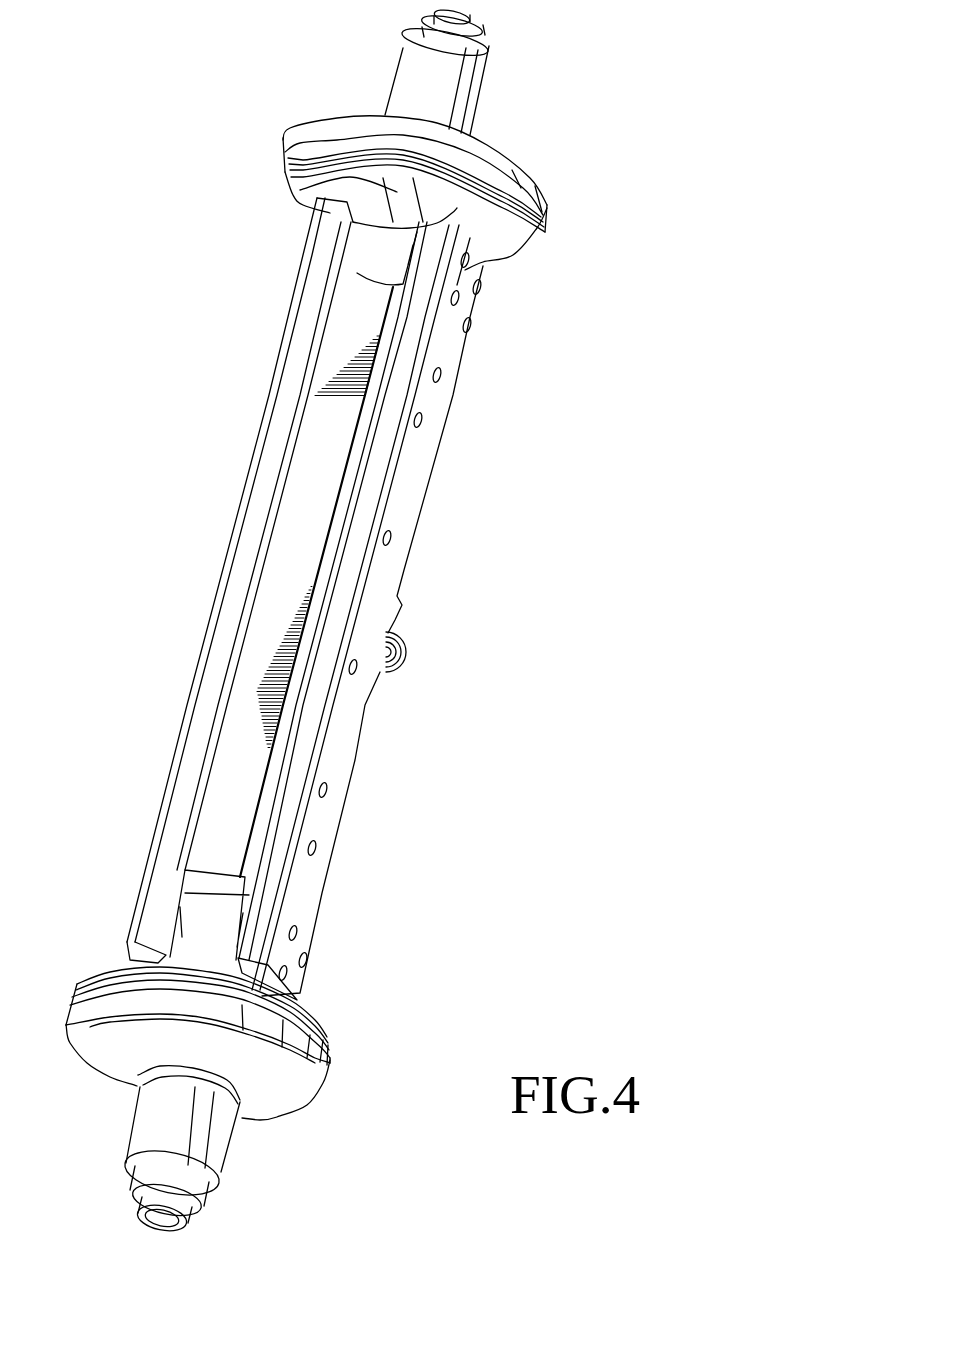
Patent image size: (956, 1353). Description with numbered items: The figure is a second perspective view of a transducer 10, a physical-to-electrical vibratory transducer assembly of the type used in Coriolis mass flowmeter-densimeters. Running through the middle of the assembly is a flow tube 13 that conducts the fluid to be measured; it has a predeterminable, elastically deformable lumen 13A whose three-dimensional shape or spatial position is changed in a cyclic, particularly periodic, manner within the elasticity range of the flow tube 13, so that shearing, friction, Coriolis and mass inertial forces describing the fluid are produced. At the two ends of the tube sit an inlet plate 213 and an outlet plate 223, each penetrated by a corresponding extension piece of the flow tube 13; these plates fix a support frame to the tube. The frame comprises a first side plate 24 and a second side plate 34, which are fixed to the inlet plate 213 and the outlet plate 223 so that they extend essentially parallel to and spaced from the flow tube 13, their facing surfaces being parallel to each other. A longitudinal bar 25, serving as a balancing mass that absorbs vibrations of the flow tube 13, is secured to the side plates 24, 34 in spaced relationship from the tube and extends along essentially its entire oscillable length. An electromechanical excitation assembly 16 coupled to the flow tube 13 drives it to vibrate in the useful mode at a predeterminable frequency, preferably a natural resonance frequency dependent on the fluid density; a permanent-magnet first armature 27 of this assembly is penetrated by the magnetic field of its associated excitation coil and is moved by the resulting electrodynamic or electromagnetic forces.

The transducer 10 is at (301, 43).
The flow tube 13 is at (468, 170).
The lumen 13A is at (157, 1235).
The outlet plate 223 is at (407, 265).
The longitudinal bar 25 is at (378, 340).
The first side plate 24 is at (381, 459).
The second side plate 34 is at (262, 466).
The first armature 27 is at (399, 641).
The electromechanical excitation assembly 16 is at (421, 664).
The inlet plate 213 is at (227, 930).